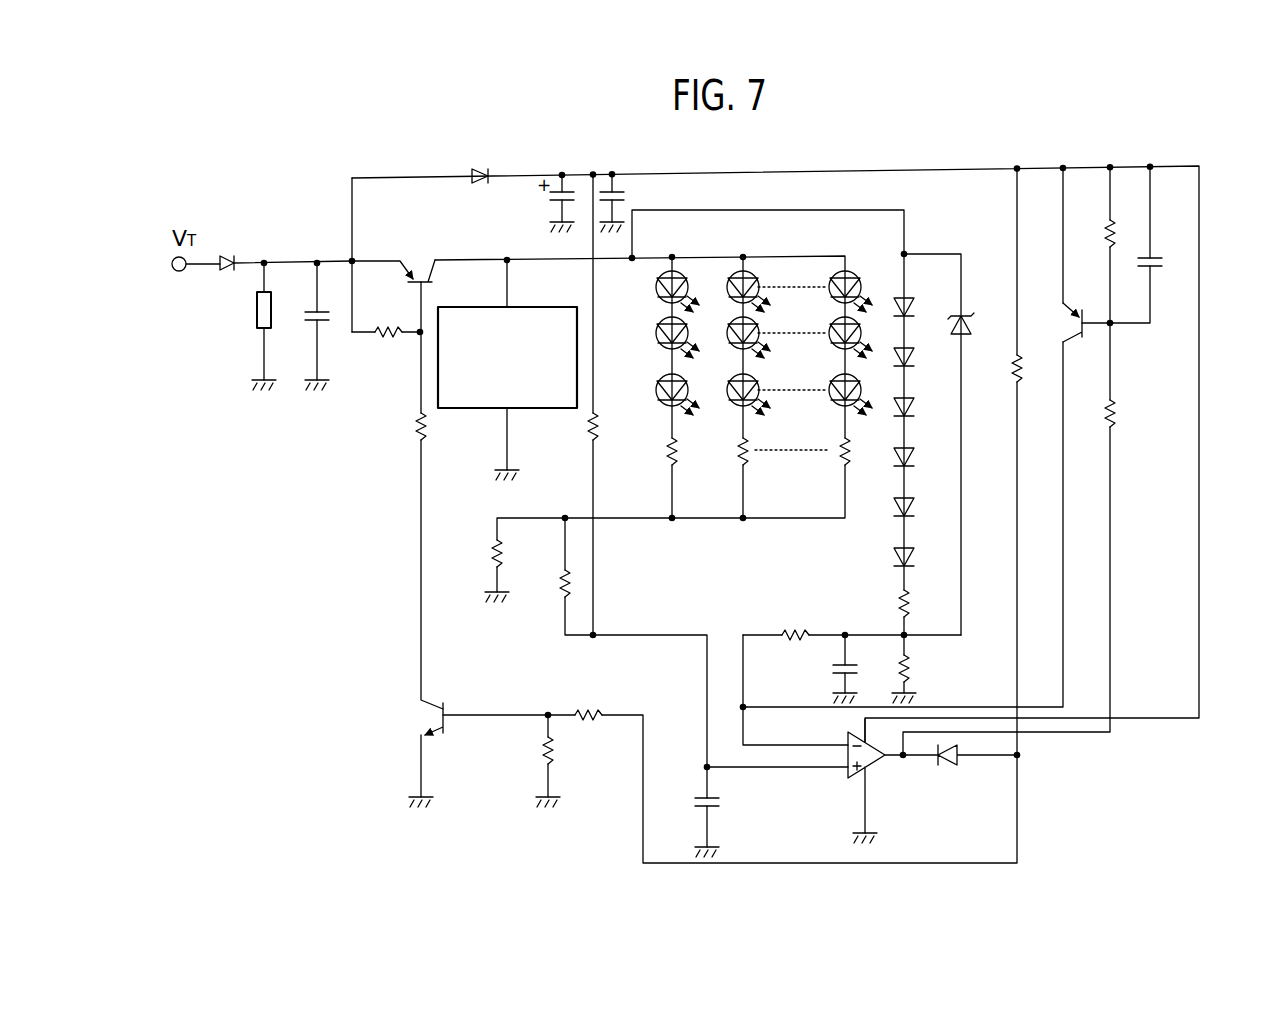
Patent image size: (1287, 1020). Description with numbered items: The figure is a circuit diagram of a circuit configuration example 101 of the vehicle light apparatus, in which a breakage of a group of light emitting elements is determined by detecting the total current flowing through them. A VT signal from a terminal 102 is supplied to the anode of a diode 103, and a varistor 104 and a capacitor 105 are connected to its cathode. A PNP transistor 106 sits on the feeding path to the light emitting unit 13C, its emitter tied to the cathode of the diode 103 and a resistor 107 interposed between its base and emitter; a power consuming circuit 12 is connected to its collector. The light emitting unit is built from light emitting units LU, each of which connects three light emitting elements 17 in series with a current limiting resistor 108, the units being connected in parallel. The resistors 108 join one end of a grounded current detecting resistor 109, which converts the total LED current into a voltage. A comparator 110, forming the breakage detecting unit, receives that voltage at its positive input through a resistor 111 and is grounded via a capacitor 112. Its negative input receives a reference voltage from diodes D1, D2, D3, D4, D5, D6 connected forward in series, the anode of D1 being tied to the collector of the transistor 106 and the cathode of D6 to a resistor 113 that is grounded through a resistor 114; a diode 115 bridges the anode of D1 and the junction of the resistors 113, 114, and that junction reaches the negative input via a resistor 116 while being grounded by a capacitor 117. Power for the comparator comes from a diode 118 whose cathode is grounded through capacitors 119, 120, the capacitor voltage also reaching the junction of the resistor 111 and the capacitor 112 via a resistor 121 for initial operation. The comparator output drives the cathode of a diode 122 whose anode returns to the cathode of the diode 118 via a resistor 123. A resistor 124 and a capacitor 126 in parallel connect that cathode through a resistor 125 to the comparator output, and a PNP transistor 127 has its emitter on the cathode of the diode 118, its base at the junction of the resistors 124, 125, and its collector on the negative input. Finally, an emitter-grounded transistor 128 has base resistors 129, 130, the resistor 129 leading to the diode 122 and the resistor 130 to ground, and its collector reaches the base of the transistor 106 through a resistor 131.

The circuit configuration example 101 is at (1211, 147).
The terminal 102 is at (177, 273).
The diode 103 is at (226, 255).
The varistor 104 is at (258, 316).
The capacitor 105 is at (313, 322).
The PNP transistor 106 is at (414, 292).
The resistor 107 is at (395, 339).
The current limiting resistor 108 is at (668, 458).
The current detecting resistor 109 is at (491, 552).
The comparator 110 is at (872, 768).
The resistor 111 is at (562, 594).
The capacitor 112 is at (722, 797).
The resistor 113 is at (894, 602).
The resistor 114 is at (918, 667).
The diode 115 is at (966, 320).
The resistor 116 is at (793, 626).
The capacitor 117 is at (833, 667).
The diode 118 is at (481, 170).
The capacitor 119 is at (556, 205).
The capacitor 120 is at (625, 192).
The resistor 121 is at (588, 438).
The diode 122 is at (946, 768).
The resistor 123 is at (1021, 373).
The resistor 124 is at (1114, 226).
The resistor 125 is at (1115, 413).
The capacitor 126 is at (1156, 257).
The PNP transistor 127 is at (1073, 340).
The transistor 128 is at (444, 704).
The resistor 129 is at (590, 712).
The resistor 130 is at (552, 750).
The resistor 131 is at (413, 440).
The power consuming circuit 12 is at (481, 412).
The light emitting element 17 is at (660, 302).
The light emitting unit 13C is at (689, 546).
The light emitting unit LU is at (688, 462).
The diode D1 is at (913, 305).
The diode D2 is at (914, 358).
The diode D3 is at (914, 408).
The diode D4 is at (914, 458).
The diode D5 is at (914, 508).
The diode D6 is at (914, 558).